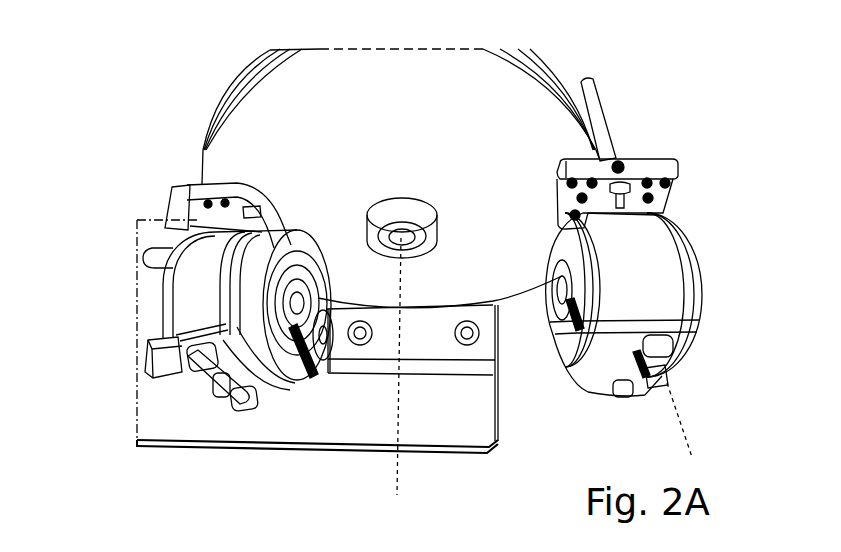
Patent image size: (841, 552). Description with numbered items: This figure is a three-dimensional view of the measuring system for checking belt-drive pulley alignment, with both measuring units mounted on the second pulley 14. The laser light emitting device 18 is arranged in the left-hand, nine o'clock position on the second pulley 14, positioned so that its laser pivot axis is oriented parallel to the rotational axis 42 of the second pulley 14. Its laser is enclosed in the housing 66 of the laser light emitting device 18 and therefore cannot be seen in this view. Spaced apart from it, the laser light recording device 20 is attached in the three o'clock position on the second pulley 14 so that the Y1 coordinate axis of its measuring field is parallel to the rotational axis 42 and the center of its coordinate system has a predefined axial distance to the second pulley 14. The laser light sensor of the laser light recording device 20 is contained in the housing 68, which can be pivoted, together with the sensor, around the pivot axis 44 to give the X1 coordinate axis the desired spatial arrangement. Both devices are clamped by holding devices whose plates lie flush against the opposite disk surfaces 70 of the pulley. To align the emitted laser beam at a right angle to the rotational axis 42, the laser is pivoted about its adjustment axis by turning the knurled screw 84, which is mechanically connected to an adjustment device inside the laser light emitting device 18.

The second pulley 14 is at (258, 132).
The laser light emitting device 18 is at (181, 297).
The laser light recording device 20 is at (663, 280).
The rotational axis 42 is at (398, 468).
The pivot axis 44 is at (690, 432).
The housing 66 is at (198, 318).
The housing 68 is at (658, 321).
The disk surfaces 70 is at (488, 96).
The knurled screw 84 is at (291, 385).